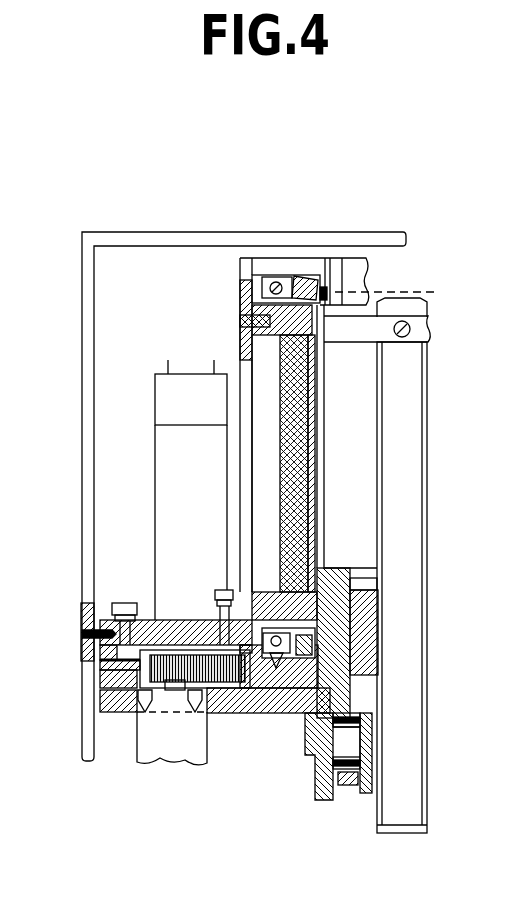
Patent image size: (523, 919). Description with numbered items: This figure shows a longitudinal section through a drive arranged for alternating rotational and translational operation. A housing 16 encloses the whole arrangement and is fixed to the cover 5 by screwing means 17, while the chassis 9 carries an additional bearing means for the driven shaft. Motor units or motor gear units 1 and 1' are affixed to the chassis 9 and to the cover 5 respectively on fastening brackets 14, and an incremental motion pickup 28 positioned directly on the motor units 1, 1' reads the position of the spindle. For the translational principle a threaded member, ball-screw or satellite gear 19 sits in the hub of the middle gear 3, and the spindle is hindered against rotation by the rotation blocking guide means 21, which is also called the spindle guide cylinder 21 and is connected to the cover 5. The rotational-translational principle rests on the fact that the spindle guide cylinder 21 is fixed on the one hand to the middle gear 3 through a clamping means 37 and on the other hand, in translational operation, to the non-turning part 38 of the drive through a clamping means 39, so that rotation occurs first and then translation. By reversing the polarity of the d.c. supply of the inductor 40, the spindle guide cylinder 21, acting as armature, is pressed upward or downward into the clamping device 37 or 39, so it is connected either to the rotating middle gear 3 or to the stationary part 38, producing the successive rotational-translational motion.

The motor unit or motor gear unit 1 is at (215, 746).
The motor unit or motor gear unit 1' is at (173, 522).
The middle gear 3 is at (250, 712).
The cover 5 is at (148, 618).
The chassis 9 is at (321, 795).
The fastening bracket 14 is at (110, 688).
The housing 16 is at (146, 240).
The screwing means 17 is at (90, 633).
The threaded member, ball-screw or satellite gear 19 is at (372, 611).
The rotation blocking guide means (spindle guide cylinder) 21 is at (320, 580).
The incremental motion pickup 28 is at (162, 390).
The clamping means 37 is at (266, 606).
The non-turning part 38 is at (247, 382).
The clamping means 39 is at (297, 285).
The inductor 40 is at (282, 374).